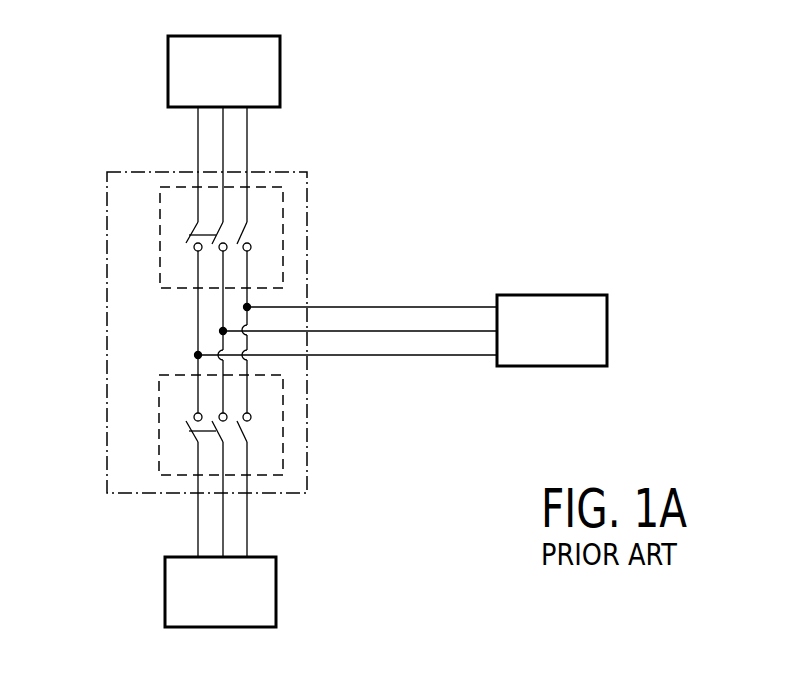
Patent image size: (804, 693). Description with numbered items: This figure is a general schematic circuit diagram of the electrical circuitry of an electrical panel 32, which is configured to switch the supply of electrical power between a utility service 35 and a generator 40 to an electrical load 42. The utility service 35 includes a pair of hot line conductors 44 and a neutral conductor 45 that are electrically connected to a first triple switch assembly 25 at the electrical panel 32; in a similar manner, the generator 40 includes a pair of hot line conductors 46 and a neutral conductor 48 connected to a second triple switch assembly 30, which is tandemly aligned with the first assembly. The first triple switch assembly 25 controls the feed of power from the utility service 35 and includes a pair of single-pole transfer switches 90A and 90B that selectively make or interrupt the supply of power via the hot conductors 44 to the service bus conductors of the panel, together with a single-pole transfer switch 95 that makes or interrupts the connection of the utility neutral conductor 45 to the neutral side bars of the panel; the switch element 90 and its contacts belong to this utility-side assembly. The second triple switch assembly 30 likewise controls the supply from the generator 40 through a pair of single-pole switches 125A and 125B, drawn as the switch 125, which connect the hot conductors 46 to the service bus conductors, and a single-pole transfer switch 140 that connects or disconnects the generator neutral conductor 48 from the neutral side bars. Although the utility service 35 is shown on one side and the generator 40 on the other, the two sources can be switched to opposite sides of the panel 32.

The generator 40 is at (280, 64).
The electrical load 42 is at (607, 345).
The utility service 35 is at (277, 605).
The hot line conductors 46 is at (223, 143).
The neutral conductor 48 is at (248, 145).
The second triple switch assembly 30 is at (287, 215).
The electrical panel 32 is at (308, 275).
The generator switch blade 125 is at (186, 231).
The single-pole switch 125A is at (187, 240).
The single-pole switch 125B is at (215, 247).
The single-pole transfer switch 140 is at (252, 228).
The first triple switch assembly 25 is at (308, 458).
The utility switch blade 90 is at (188, 436).
The single-pole transfer switch 90A is at (187, 422).
The single-pole transfer switch 90B is at (212, 427).
The single-pole transfer switch 95 is at (252, 431).
The hot line conductors 44 is at (222, 520).
The neutral conductor 45 is at (247, 525).